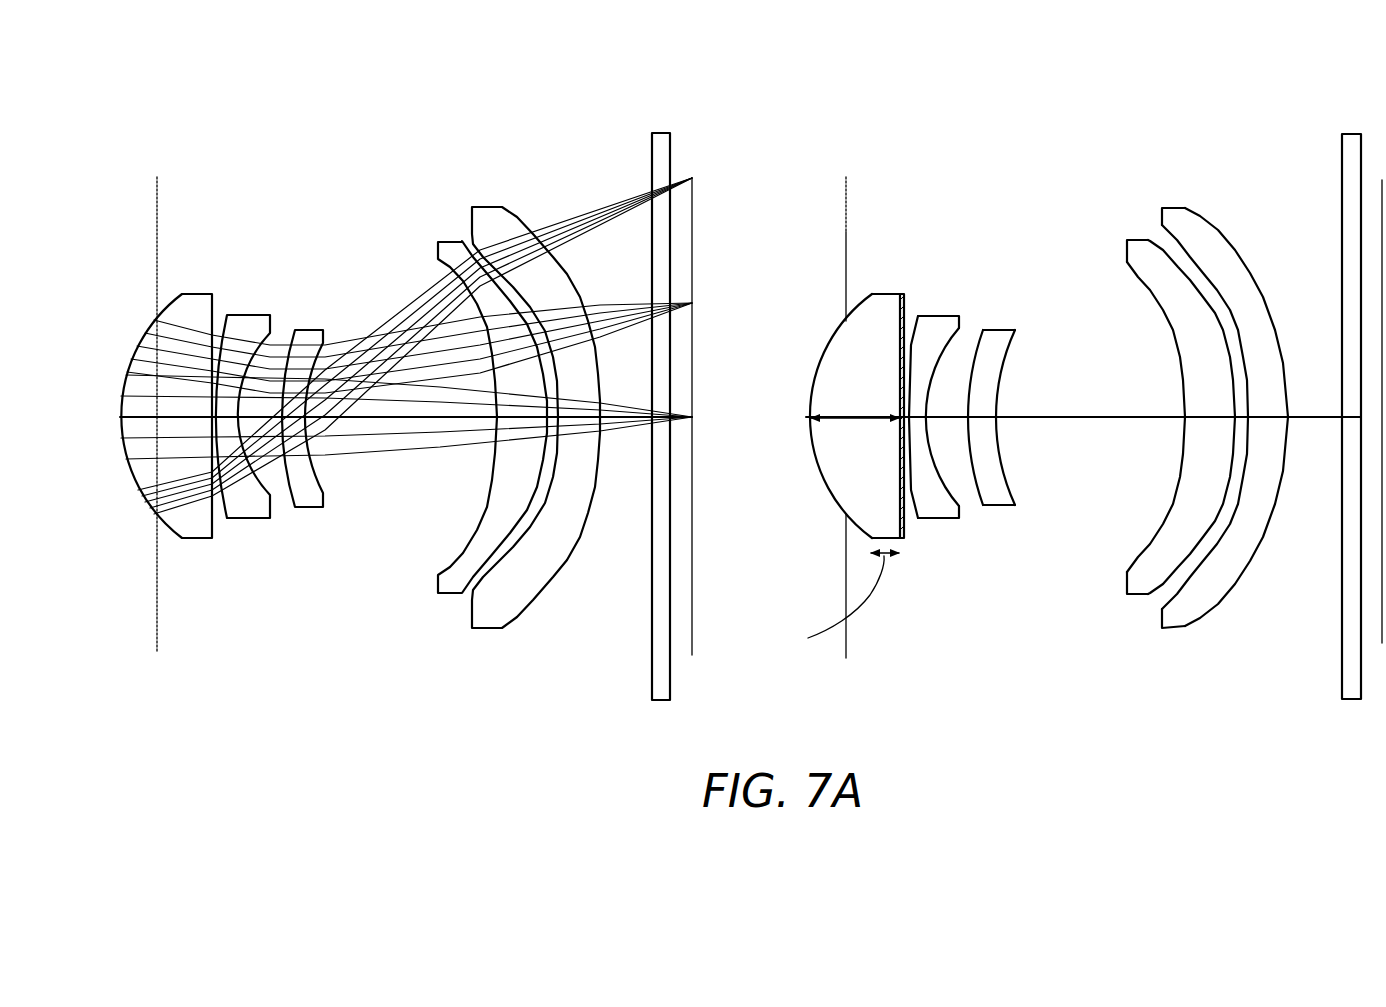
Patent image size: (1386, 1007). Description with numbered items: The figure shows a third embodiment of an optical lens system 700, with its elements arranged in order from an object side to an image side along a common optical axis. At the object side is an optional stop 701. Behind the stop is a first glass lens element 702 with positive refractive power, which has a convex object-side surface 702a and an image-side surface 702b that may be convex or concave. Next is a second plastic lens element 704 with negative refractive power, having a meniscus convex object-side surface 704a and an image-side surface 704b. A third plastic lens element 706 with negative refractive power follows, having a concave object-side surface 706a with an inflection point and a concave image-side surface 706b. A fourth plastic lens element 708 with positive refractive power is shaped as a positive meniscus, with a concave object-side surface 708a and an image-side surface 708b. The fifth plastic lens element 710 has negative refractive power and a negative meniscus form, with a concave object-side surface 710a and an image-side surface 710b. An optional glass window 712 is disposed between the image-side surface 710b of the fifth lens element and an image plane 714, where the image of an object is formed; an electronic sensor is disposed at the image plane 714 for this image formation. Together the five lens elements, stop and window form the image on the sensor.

The optical lens system embodiment 700 is at (1200, 95).
The optional stop 701 is at (846, 236).
The first glass lens element 702 is at (880, 305).
The convex object-side surface 702a is at (837, 505).
The image-side surface 702b is at (898, 470).
The second plastic lens element 704 is at (935, 318).
The object-side surface of second lens element 704a is at (906, 518).
The image-side surface of second lens element 704b is at (938, 470).
The third plastic lens element 706 is at (999, 340).
The concave object-side surface 706a is at (972, 393).
The concave image-side surface 706b is at (997, 445).
The fourth plastic lens element 708 is at (1140, 250).
The concave object-side surface of fourth lens element 708a is at (1182, 370).
The image-side surface of fourth lens element 708b is at (1222, 492).
The fifth plastic lens element 710 is at (1197, 225).
The concave object-side surface of fifth lens element 710a is at (1183, 563).
The image-side surface of fifth lens element 710b is at (1278, 510).
The optional glass window 712 is at (1340, 683).
The image plane 714 is at (1382, 643).